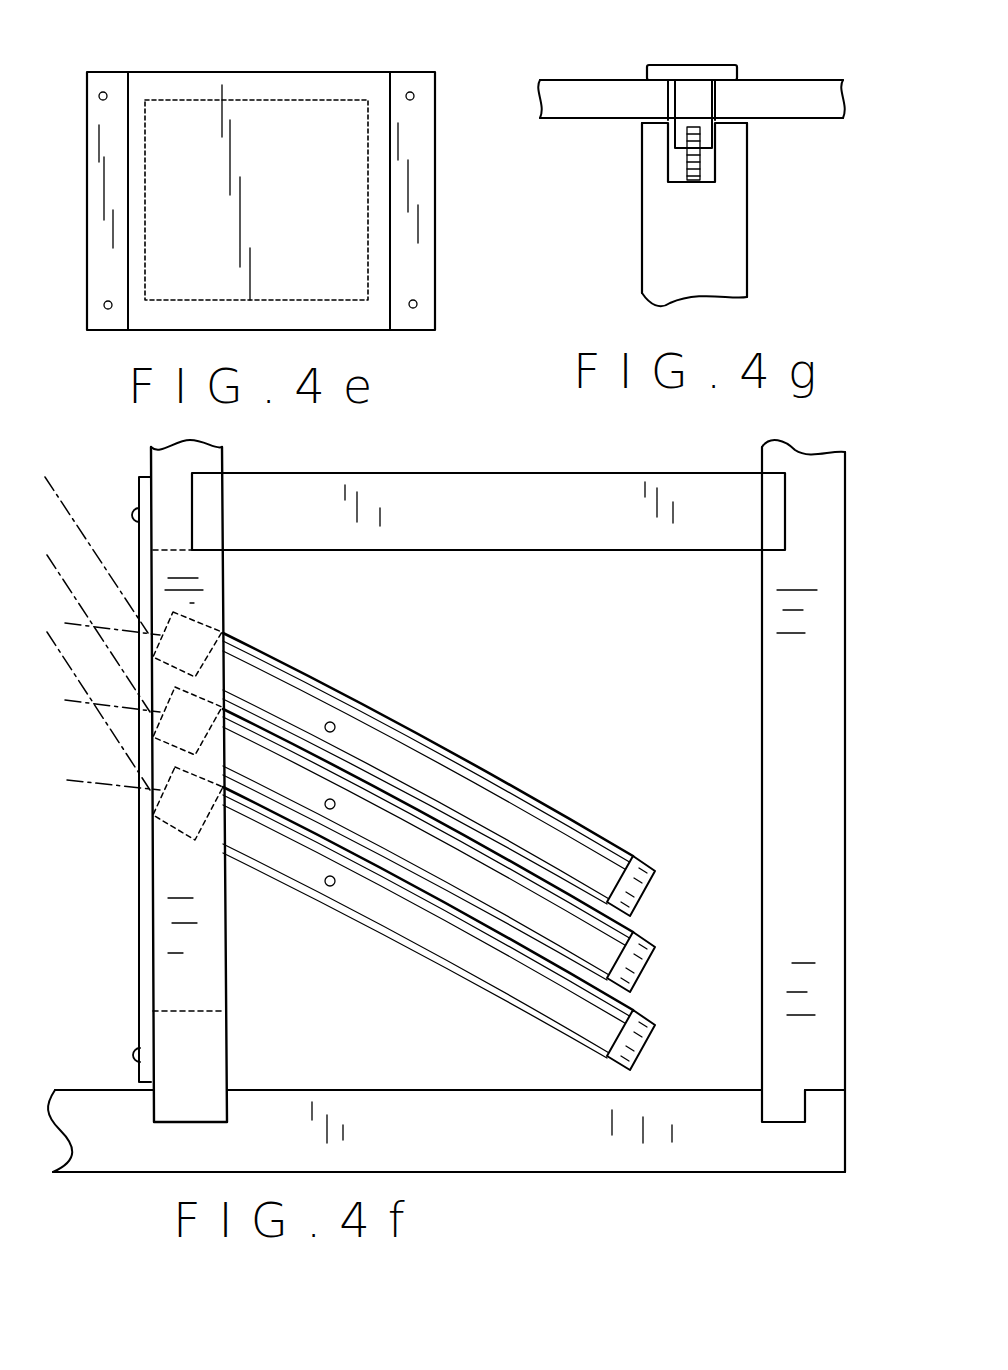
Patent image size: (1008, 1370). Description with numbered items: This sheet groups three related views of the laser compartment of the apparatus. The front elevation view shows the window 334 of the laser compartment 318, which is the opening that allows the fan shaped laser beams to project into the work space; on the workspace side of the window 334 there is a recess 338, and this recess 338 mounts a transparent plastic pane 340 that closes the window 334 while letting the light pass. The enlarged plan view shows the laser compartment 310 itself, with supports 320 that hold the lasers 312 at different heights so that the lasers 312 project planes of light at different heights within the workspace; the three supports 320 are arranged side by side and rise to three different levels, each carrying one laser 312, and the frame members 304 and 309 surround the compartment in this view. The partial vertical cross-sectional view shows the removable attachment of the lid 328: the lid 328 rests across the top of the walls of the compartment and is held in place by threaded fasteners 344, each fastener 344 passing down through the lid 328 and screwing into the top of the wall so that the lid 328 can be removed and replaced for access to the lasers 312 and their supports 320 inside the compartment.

In FIG. 4F, the bottom frame member 304 is at (487, 1140).
In FIG. 4F, the top frame member 309 is at (452, 530).
In FIG. 4F, the laser compartment 310 is at (815, 730).
In FIG. 4G, the laser 312 is at (723, 248).
In FIG. 4F, the laser 312 is at (140, 1011).
In FIG. 4F, the laser compartment 318 is at (471, 851).
In FIG. 4F, the support 320 is at (493, 815).
In FIG. 4G, the lid 328 is at (802, 100).
In FIG. 4E, the window 334 is at (368, 163).
In FIG. 4F, the window 334 is at (178, 1007).
In FIG. 4E, the recess 338 is at (128, 93).
In FIG. 4E, the transparent plastic pane 340 is at (350, 85).
In FIG. 4F, the transparent plastic pane 340 is at (145, 931).
In FIG. 4G, the threaded fastener 344 is at (715, 63).